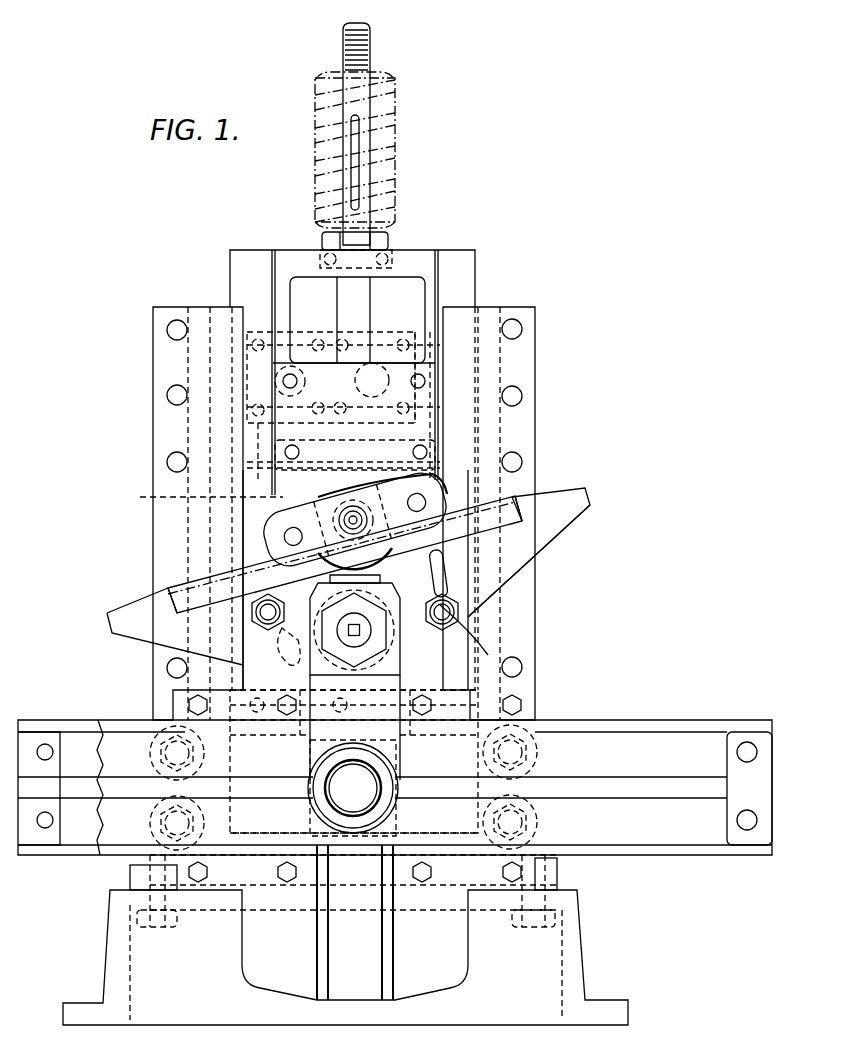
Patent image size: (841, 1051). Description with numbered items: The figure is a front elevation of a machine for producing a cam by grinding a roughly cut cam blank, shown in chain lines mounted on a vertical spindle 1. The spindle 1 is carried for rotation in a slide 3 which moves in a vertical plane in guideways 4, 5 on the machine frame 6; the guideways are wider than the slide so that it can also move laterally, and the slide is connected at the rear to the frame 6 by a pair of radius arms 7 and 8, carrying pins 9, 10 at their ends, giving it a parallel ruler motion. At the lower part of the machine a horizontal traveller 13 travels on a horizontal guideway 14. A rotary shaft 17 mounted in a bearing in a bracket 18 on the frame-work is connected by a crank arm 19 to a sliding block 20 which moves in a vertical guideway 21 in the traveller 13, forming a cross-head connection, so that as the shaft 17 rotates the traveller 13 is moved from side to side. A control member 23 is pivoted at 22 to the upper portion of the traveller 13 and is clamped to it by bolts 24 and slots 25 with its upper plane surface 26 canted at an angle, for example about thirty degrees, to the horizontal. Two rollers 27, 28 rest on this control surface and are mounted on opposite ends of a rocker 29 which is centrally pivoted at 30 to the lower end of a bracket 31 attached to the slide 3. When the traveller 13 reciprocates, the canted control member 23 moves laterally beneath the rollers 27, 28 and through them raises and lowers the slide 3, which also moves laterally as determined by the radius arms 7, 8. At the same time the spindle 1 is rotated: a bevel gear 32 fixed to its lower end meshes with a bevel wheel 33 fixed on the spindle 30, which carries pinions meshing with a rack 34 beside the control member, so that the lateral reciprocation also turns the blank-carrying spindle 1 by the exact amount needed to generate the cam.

The vertical spindle 1 is at (372, 58).
The slide 3 is at (420, 262).
The guideway 4 is at (463, 332).
The guideway 5 is at (222, 318).
The frame 6 is at (165, 373).
The radius arm 7 is at (368, 362).
The radius arm 8 is at (380, 702).
The pin 9 is at (296, 352).
The pin 10 is at (386, 366).
The horizontal traveller 13 is at (456, 648).
The horizontal guideway 14 is at (632, 718).
The rotary shaft 17 is at (376, 800).
The bracket 18 is at (320, 812).
The crank arm 19 is at (385, 675).
The sliding block 20 is at (388, 568).
The vertical guideway 21 is at (382, 972).
The pivot 22 is at (345, 554).
The control member 23 is at (590, 498).
The bolts 24 is at (452, 612).
The slots 25 is at (440, 556).
The plane surface 26 is at (133, 607).
The roller 27 is at (447, 492).
The roller 28 is at (265, 532).
The rocker 29 is at (282, 548).
The pivot spindle 30 is at (340, 512).
The bracket 31 is at (430, 416).
The bevel gear 32 is at (378, 462).
The bevel wheel 33 is at (150, 497).
The rack 34 is at (495, 498).